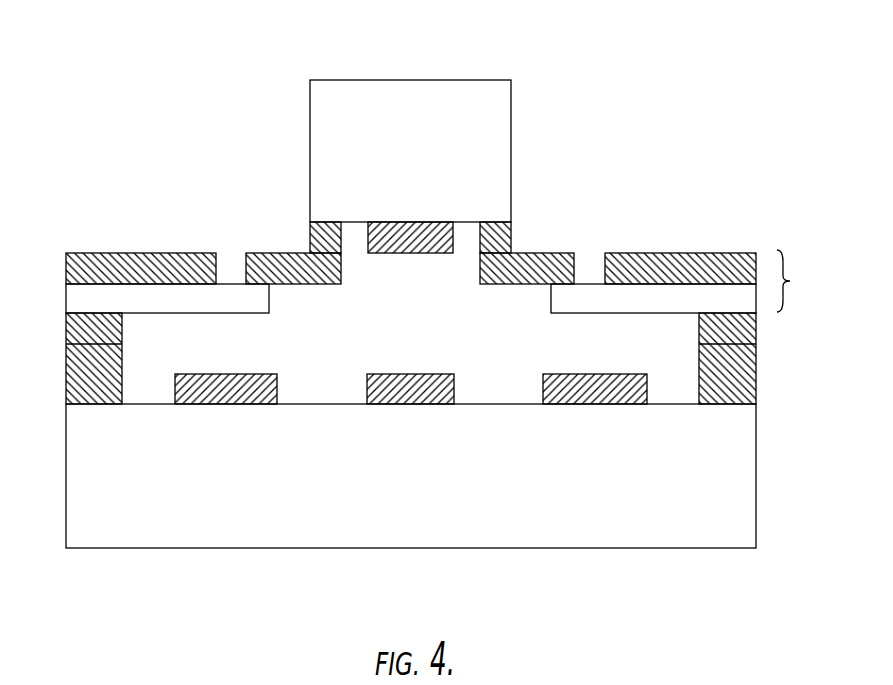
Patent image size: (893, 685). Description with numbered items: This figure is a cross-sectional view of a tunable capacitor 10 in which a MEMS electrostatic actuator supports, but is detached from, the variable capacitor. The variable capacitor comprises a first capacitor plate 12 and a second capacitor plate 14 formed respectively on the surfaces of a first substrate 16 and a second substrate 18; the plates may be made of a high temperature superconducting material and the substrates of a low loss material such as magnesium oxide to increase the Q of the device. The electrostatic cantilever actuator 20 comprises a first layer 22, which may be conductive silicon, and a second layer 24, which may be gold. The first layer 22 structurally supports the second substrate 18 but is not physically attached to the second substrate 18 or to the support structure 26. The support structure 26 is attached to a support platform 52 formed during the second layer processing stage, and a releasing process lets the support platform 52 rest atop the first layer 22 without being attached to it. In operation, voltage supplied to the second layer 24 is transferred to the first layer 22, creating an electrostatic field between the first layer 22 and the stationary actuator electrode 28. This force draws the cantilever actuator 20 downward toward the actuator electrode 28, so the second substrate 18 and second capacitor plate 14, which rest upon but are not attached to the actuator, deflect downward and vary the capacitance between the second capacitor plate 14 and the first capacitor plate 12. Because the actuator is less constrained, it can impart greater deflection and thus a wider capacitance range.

The tunable capacitor 10 is at (606, 169).
The first capacitor plate 12 is at (420, 385).
The second capacitor plate 14 is at (400, 247).
The first substrate 16 is at (720, 465).
The second substrate 18 is at (495, 175).
The electrostatic cantilever actuator 20 is at (798, 281).
The first layer 22 is at (85, 310).
The second layer 24 is at (78, 275).
The support structure 26 is at (318, 238).
The actuator electrode 28 is at (222, 395).
The support platform 52 is at (262, 268).